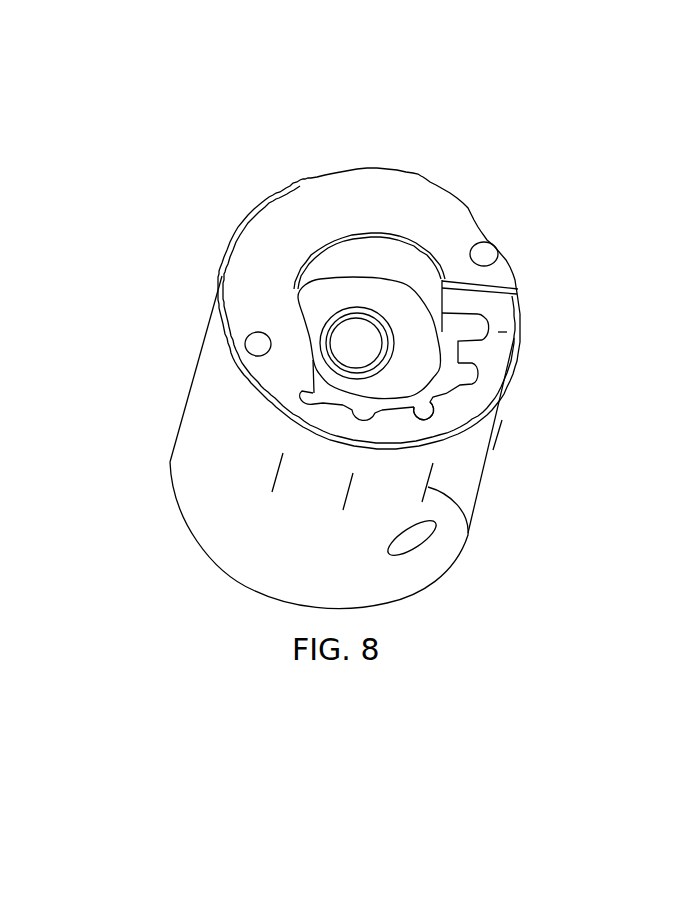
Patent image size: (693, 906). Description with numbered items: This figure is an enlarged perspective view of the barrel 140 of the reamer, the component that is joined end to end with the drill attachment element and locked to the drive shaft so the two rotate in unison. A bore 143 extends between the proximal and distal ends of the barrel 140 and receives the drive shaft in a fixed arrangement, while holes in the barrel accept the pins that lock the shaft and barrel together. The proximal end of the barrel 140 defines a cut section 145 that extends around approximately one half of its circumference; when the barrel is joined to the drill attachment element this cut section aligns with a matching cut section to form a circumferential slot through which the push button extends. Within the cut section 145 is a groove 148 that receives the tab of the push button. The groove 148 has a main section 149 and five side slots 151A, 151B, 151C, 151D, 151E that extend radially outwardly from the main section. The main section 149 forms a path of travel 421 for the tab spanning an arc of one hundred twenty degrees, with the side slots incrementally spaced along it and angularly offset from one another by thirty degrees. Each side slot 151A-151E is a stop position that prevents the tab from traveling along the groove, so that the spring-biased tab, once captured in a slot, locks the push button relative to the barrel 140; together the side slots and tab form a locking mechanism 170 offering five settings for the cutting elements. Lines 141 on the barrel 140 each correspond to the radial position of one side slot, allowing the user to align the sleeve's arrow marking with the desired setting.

The barrel 140 is at (420, 163).
The lines 141 is at (276, 471).
The bore 143 is at (353, 333).
The cut section 145 is at (513, 302).
The groove 148 is at (462, 328).
The main section 149 is at (312, 352).
The side slot 151A is at (491, 320).
The side slot 151B is at (478, 372).
The side slot 151C is at (432, 407).
The side slot 151D is at (350, 423).
The side slot 151E is at (302, 396).
The locking mechanism 170 is at (396, 420).
The path of travel 421 is at (433, 401).